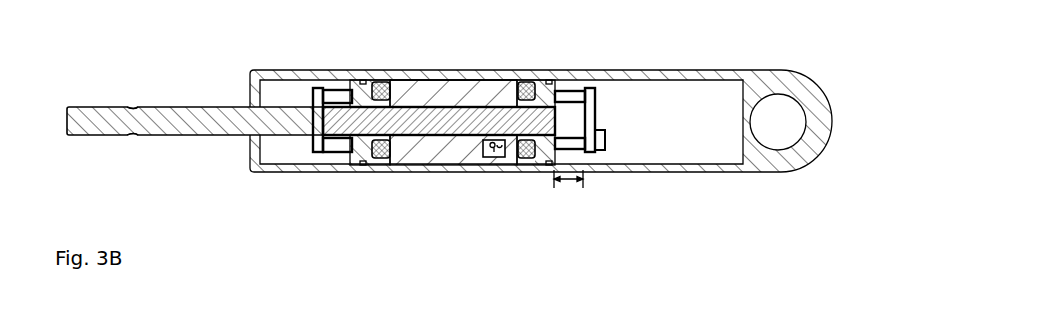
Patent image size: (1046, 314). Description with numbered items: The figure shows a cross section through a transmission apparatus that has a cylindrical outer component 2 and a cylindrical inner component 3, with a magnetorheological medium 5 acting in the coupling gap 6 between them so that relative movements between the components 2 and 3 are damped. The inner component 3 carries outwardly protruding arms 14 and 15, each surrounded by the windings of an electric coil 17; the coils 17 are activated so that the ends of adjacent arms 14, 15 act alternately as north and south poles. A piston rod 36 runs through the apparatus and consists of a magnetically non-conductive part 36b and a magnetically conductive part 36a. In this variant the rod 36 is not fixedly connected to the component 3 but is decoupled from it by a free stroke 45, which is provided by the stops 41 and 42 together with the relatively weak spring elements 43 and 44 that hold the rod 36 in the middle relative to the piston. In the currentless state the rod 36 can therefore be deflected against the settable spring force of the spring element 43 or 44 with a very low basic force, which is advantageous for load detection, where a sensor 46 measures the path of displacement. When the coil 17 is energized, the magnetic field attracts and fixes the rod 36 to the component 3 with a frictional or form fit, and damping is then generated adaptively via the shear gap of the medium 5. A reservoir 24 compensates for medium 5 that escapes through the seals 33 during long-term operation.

The component 2 is at (263, 75).
The component 3 is at (552, 82).
The magnetorheological medium 5 is at (447, 75).
The coupling gap 6 is at (483, 80).
The arm 14 is at (430, 82).
The arm 15 is at (463, 156).
The electric coil 17 is at (384, 80).
The reservoir 24 is at (510, 154).
The seal 33 is at (360, 80).
The rod 36 is at (152, 108).
The magnetically conductive part 36a is at (437, 148).
The magnetically non-conductive part 36b is at (195, 136).
The stop 41 is at (313, 97).
The stop 42 is at (576, 95).
The spring element 43 is at (335, 153).
The spring element 44 is at (587, 105).
The free stroke 45 is at (586, 185).
The sensor 46 is at (600, 146).